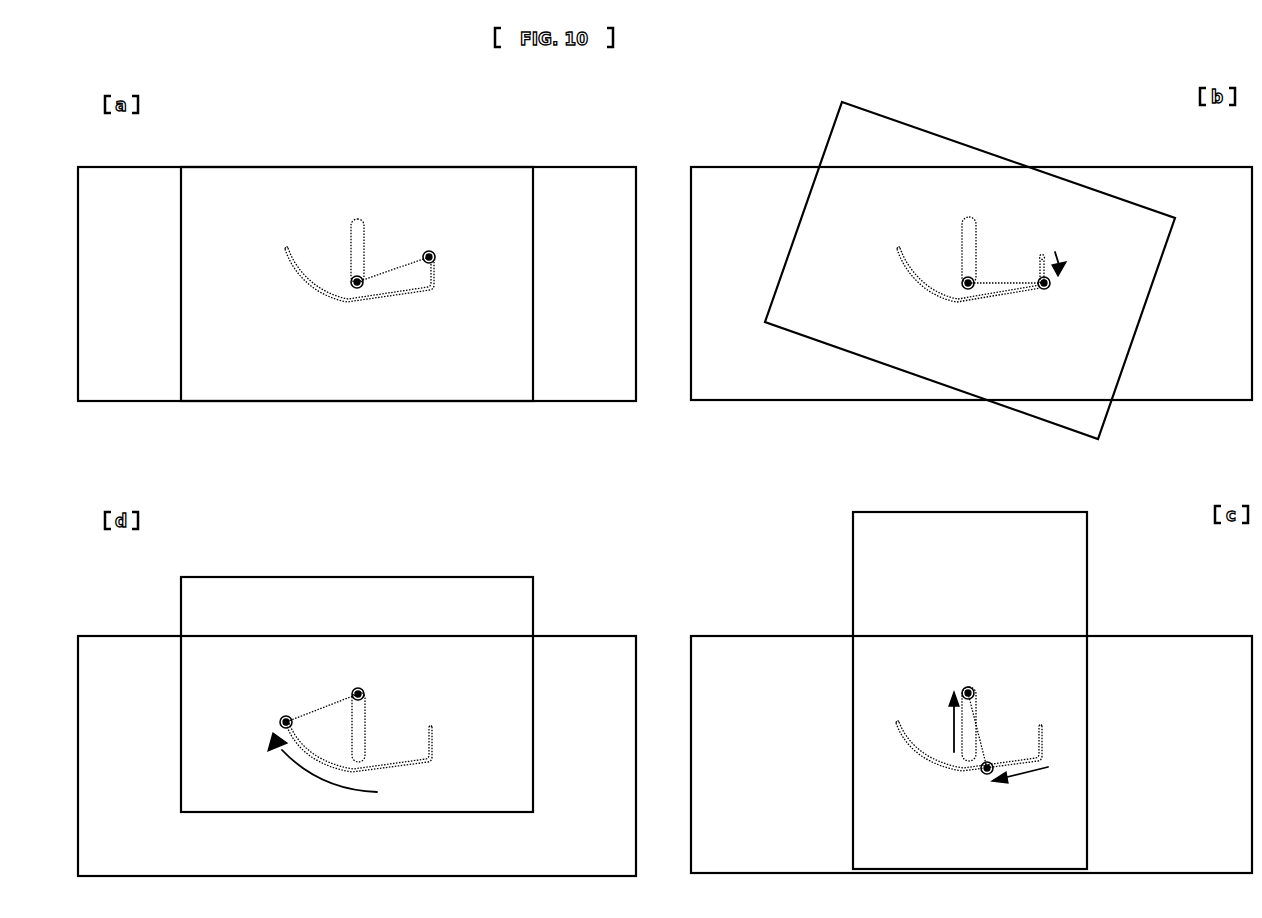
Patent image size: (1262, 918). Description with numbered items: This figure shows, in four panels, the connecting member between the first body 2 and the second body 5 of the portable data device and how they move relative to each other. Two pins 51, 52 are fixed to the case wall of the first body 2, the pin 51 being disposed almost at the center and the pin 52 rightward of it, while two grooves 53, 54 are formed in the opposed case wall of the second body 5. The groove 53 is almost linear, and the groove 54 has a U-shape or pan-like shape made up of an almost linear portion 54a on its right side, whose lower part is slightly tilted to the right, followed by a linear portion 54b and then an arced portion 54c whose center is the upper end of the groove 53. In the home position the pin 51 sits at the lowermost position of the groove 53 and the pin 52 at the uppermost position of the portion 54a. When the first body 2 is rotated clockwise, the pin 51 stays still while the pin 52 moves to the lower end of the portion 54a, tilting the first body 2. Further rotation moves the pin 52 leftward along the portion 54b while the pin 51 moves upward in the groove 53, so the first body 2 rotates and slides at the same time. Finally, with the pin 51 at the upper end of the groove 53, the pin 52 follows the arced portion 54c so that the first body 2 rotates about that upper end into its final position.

The first body 2 is at (397, 189).
The second body 5 is at (589, 191).
The pin 51 is at (353, 277).
The pin 52 is at (432, 252).
The groove 53 is at (351, 248).
The groove 54 is at (712, 443).
The almost linear portion 54a is at (1047, 257).
The linear portion 54b is at (1012, 292).
The arced portion 54c is at (910, 273).